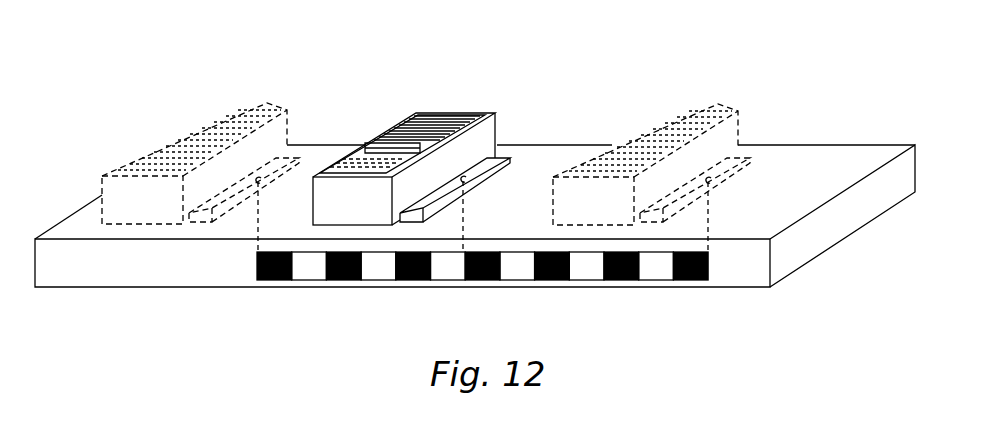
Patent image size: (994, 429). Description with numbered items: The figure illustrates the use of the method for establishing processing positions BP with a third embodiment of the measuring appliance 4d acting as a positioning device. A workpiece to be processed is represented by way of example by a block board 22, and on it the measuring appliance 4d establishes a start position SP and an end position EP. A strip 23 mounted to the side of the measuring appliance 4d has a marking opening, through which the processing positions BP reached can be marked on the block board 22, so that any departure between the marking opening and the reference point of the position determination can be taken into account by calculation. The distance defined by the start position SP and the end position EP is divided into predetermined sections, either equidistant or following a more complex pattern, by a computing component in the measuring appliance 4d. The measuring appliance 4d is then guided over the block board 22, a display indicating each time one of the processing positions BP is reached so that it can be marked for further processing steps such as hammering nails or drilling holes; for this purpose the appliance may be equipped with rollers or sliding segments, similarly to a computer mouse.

The measuring appliance 4d is at (402, 84).
The block board 22 is at (745, 270).
The strip 23 is at (423, 212).
The start position SP is at (200, 220).
The processing position BP is at (465, 258).
The end position EP is at (651, 222).